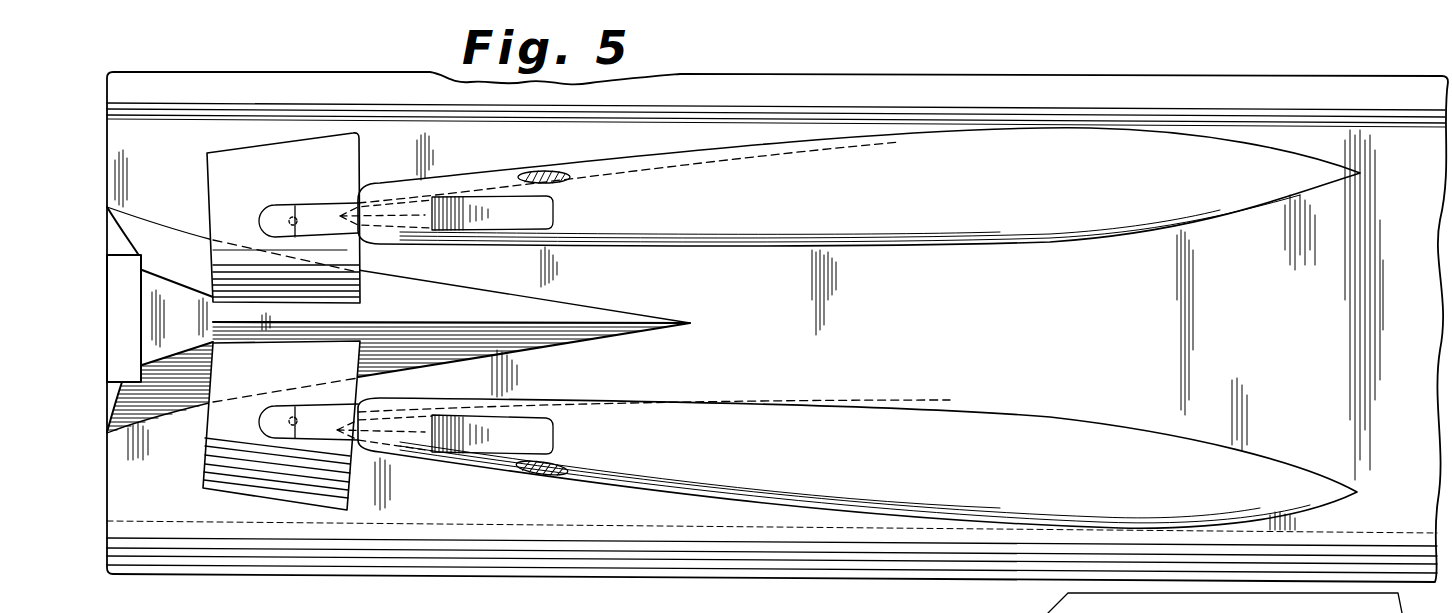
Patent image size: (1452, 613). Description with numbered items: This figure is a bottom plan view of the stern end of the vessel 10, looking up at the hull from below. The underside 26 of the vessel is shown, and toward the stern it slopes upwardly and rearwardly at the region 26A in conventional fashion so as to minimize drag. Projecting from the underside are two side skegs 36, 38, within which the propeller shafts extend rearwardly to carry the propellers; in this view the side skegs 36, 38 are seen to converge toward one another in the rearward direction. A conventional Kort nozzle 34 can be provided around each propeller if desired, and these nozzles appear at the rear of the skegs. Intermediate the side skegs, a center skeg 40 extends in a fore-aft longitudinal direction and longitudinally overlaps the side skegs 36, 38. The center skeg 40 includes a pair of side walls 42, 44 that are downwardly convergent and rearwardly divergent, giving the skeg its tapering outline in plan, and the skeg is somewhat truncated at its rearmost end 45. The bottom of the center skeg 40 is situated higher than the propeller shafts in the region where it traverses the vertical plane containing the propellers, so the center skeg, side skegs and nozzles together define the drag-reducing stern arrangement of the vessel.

The projectile assembly 10 is at (960, 70).
The underside 26 is at (1410, 160).
The upwardly and rearwardly sloping portion of the underside 26A is at (1003, 331).
The Kort nozzle 34 is at (298, 150).
The side skeg 36 is at (995, 505).
The side skeg 38 is at (1053, 135).
The center skeg 40 is at (560, 305).
The side wall 42 is at (153, 240).
The side wall 44 is at (150, 400).
The rearmost end 45 is at (168, 333).